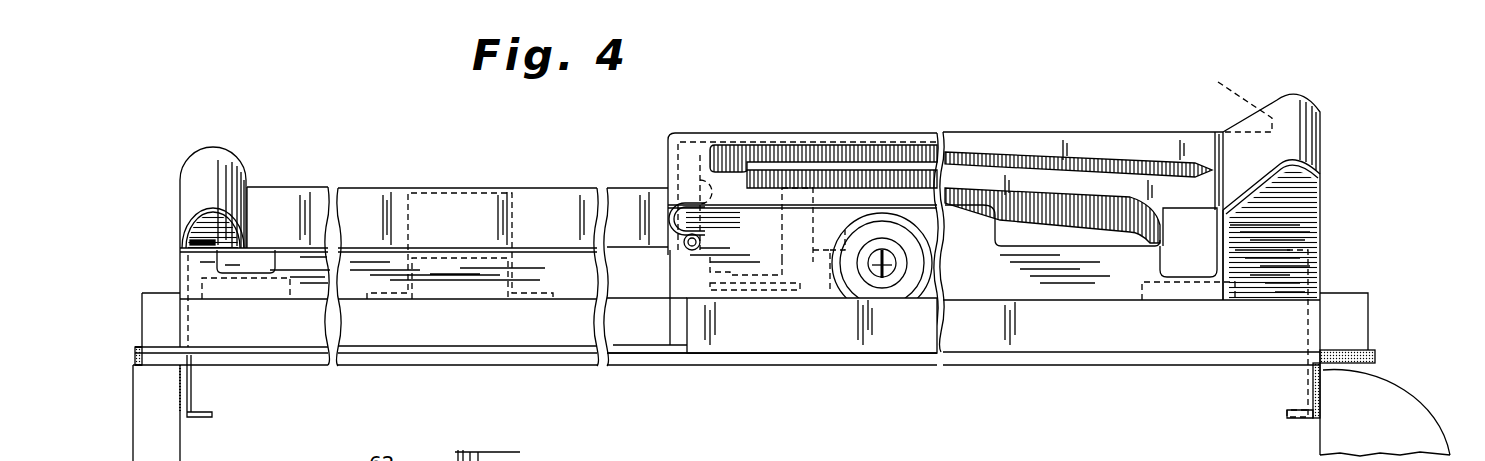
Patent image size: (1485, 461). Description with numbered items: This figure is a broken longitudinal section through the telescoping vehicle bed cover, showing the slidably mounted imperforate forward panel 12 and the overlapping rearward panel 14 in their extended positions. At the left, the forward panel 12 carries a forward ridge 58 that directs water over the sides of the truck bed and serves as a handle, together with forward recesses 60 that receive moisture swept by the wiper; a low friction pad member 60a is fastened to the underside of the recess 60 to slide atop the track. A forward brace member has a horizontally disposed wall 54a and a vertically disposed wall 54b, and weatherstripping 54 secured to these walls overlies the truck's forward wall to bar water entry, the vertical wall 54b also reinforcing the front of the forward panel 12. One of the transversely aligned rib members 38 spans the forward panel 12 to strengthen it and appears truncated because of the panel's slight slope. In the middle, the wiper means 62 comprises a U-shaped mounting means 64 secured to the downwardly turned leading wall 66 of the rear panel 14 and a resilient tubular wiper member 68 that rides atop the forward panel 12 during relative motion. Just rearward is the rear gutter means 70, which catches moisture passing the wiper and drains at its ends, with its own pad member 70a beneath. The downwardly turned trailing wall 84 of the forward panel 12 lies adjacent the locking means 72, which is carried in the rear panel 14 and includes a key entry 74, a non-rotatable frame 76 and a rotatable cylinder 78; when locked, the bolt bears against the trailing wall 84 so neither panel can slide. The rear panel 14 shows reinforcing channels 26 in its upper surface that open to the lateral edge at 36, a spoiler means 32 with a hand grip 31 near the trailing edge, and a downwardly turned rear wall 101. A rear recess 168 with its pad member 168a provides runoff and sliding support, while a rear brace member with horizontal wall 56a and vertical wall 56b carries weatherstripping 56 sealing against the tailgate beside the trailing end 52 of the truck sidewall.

The forward panel 12 is at (341, 187).
The rearward panel 14 is at (1017, 132).
The channels 26 is at (732, 152).
The hand grip 31 is at (1234, 96).
The spoiler means 32 is at (1290, 98).
The lateral edge opening 36 is at (1035, 237).
The rib members 38 is at (450, 196).
The sidewall trailing end 52 is at (1423, 402).
The weatherstripping 54 is at (183, 388).
The horizontally disposed wall 54a is at (138, 351).
The vertically disposed wall 54b is at (195, 272).
The weatherstripping 56 is at (1320, 398).
The horizontal wall 56a is at (1372, 352).
The vertical wall 56b is at (1310, 252).
The forward ridge 58 is at (207, 147).
The recesses 60 is at (247, 270).
The pad member 60a is at (213, 280).
The wiper means 62 is at (652, 160).
The mounting means 64 is at (660, 197).
The leading wall 66 is at (668, 140).
The wiper member 68 is at (700, 217).
The rear gutter means 70 is at (735, 273).
The pad member 70a is at (790, 298).
The locking means 72 is at (873, 298).
The key entry 74 is at (882, 270).
The non-rotatable frame 76 is at (947, 195).
The rotatable cylinder 78 is at (882, 262).
The trailing wall 84 is at (848, 200).
The rear wall 101 is at (1322, 176).
The recess 168 is at (1200, 272).
The pad member 168a is at (1200, 297).